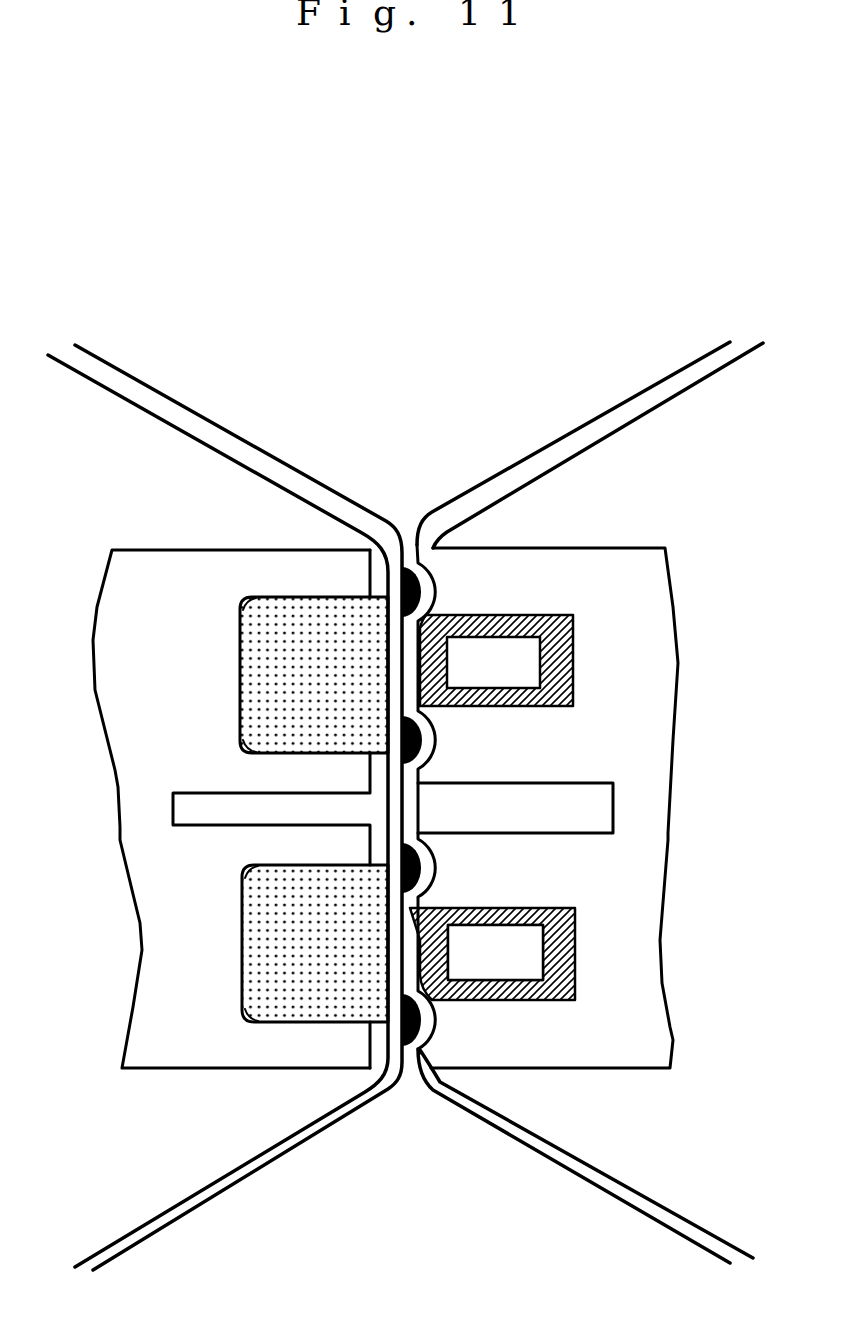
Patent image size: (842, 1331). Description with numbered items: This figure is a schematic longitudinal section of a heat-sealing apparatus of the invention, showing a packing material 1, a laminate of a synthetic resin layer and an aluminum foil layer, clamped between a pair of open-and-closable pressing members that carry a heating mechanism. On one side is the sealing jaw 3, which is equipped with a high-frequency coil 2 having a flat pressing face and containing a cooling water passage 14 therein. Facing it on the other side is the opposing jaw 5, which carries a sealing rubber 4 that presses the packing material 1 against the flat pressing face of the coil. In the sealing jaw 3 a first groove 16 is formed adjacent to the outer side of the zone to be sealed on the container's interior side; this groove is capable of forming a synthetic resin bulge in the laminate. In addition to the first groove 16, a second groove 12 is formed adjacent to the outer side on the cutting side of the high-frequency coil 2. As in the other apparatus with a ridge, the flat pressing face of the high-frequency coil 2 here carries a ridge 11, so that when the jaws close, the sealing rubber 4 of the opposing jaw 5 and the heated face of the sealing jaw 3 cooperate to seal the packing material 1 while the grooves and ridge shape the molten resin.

The packing material 1 is at (577, 448).
The high-frequency coil 2 is at (547, 903).
The sealing jaw 3 is at (616, 752).
The sealing rubber 4 is at (238, 907).
The opposing jaw 5 is at (195, 684).
The ridge 11 is at (416, 697).
The second groove 12 is at (437, 872).
The cooling water passage 14 is at (510, 973).
The first groove 16 is at (435, 597).